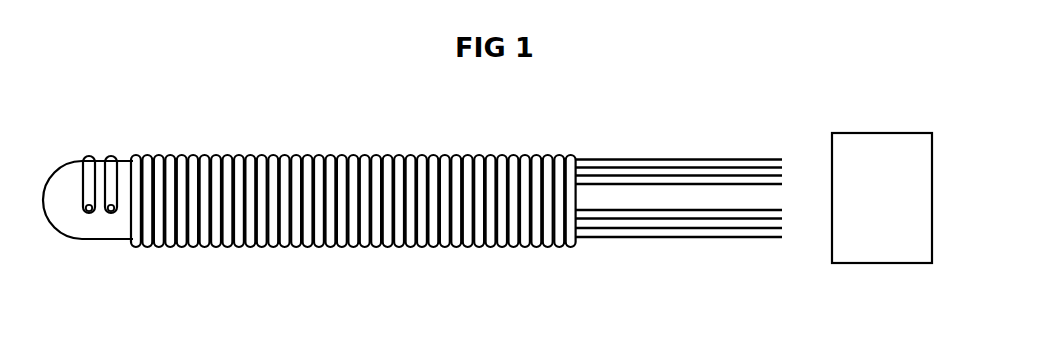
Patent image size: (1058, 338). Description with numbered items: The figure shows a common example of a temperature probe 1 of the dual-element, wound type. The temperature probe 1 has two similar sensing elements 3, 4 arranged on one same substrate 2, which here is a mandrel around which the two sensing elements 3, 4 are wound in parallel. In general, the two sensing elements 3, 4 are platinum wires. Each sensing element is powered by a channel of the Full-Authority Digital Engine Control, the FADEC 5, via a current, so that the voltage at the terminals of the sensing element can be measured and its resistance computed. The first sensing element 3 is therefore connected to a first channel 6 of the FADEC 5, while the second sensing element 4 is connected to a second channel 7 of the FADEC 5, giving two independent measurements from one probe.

The temperature probe 1 is at (347, 104).
The substrate 2 is at (102, 227).
The first sensing element 3 is at (114, 157).
The second sensing element 4 is at (92, 157).
The FADEC 5 is at (882, 245).
The first channel 6 is at (788, 157).
The second channel 7 is at (788, 207).